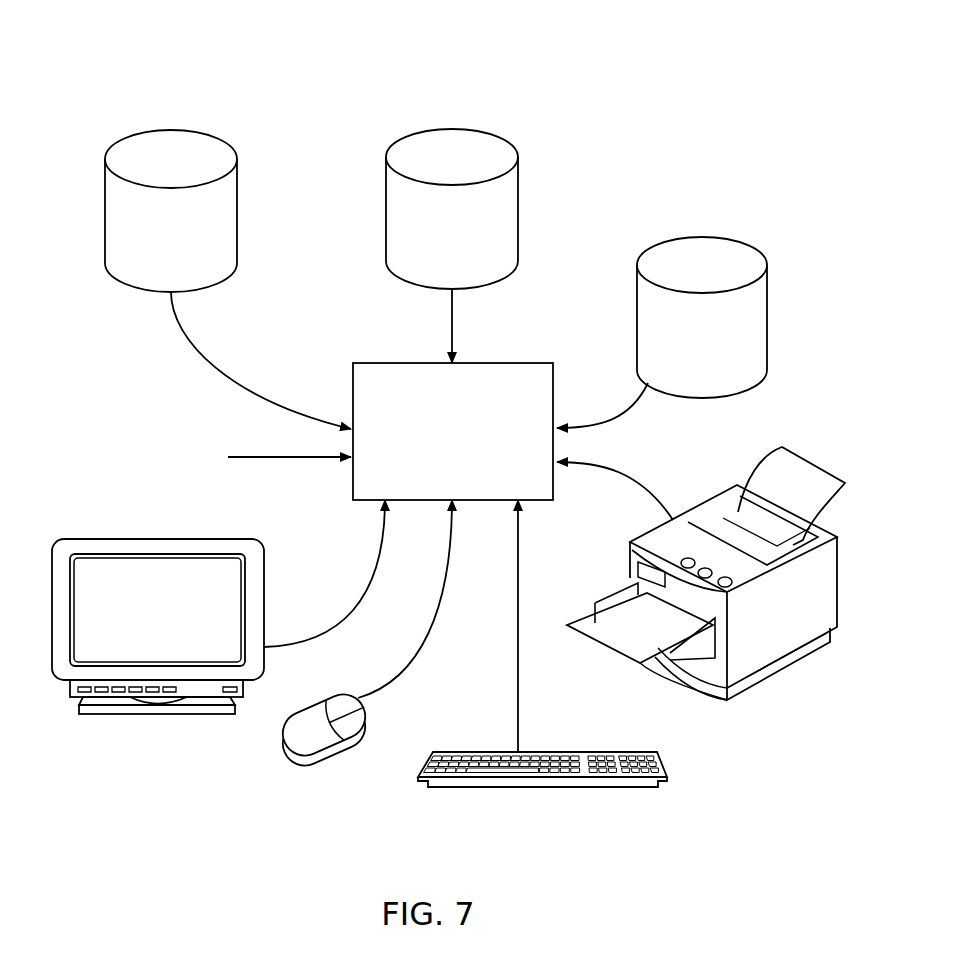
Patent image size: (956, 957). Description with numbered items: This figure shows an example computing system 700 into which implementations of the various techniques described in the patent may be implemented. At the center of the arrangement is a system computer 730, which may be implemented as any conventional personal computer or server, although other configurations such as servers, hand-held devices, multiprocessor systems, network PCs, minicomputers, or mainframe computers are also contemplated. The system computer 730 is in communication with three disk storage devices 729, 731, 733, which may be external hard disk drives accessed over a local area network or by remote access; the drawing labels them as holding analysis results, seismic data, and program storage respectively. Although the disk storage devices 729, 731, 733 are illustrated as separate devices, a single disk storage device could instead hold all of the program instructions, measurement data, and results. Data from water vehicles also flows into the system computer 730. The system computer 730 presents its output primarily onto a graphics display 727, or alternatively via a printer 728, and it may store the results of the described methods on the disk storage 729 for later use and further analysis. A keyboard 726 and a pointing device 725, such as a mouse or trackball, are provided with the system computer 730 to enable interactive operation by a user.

The computing system 700 is at (178, 57).
The pointing device 725 is at (302, 767).
The keyboard 726 is at (602, 787).
The graphics display 727 is at (163, 714).
The printer 728 is at (748, 693).
The disk storage device 729 is at (700, 237).
The system computer 730 is at (492, 363).
The disk storage device 731 is at (485, 132).
The disk storage device 733 is at (210, 133).